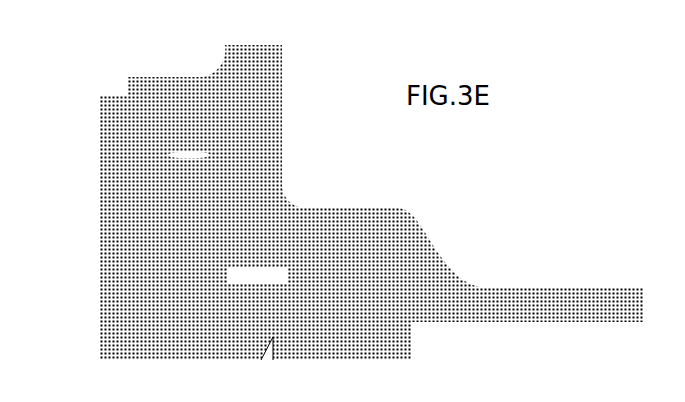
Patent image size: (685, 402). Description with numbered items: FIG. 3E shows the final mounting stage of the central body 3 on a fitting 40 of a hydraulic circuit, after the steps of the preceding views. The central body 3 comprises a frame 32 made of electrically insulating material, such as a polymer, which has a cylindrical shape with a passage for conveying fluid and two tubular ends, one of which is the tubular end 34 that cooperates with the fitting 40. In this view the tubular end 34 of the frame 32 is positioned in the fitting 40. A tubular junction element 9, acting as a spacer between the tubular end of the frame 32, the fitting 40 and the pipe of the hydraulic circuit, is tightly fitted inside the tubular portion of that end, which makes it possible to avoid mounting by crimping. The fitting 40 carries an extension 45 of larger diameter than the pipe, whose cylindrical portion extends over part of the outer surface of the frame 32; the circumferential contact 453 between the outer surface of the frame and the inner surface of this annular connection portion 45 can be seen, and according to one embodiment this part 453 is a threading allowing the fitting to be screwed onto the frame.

The extension 45 is at (152, 93).
The circumferential contact 453 is at (110, 143).
The central body 3 is at (122, 170).
The fitting 40 is at (433, 212).
The tubular junction element 9 is at (318, 348).
The frame 32 is at (147, 353).
The tubular end 34 is at (258, 363).